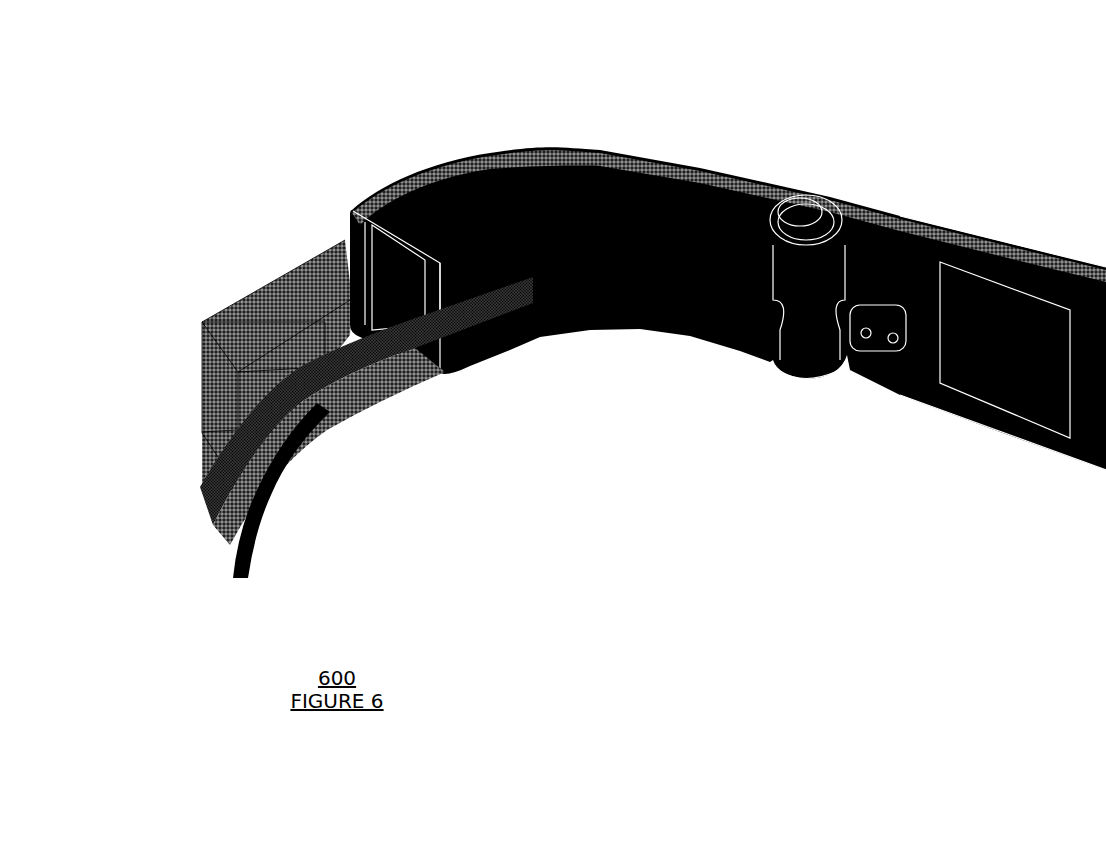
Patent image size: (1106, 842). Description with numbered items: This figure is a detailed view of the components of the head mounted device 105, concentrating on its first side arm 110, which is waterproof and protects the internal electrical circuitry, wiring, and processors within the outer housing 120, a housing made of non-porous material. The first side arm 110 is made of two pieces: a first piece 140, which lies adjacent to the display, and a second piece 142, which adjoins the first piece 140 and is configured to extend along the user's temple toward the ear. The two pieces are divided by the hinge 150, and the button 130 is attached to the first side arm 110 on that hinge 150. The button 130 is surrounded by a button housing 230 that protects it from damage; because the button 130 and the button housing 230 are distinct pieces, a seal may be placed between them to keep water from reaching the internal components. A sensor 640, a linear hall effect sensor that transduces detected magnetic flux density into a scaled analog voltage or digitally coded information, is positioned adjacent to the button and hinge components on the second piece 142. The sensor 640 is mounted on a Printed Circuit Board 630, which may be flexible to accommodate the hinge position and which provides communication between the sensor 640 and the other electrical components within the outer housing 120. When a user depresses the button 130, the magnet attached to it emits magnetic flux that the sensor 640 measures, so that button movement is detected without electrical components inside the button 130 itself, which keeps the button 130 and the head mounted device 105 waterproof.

The head mounted device 105 is at (403, 74).
The first side arm 110 is at (867, 464).
The outer housing 120 is at (228, 340).
The button 130 is at (800, 210).
The first piece 140 is at (527, 150).
The second piece 142 is at (997, 238).
The hinge 150 is at (832, 172).
The button housing 230 is at (799, 380).
The Printed Circuit Board 630 is at (927, 262).
The sensor 640 is at (881, 268).